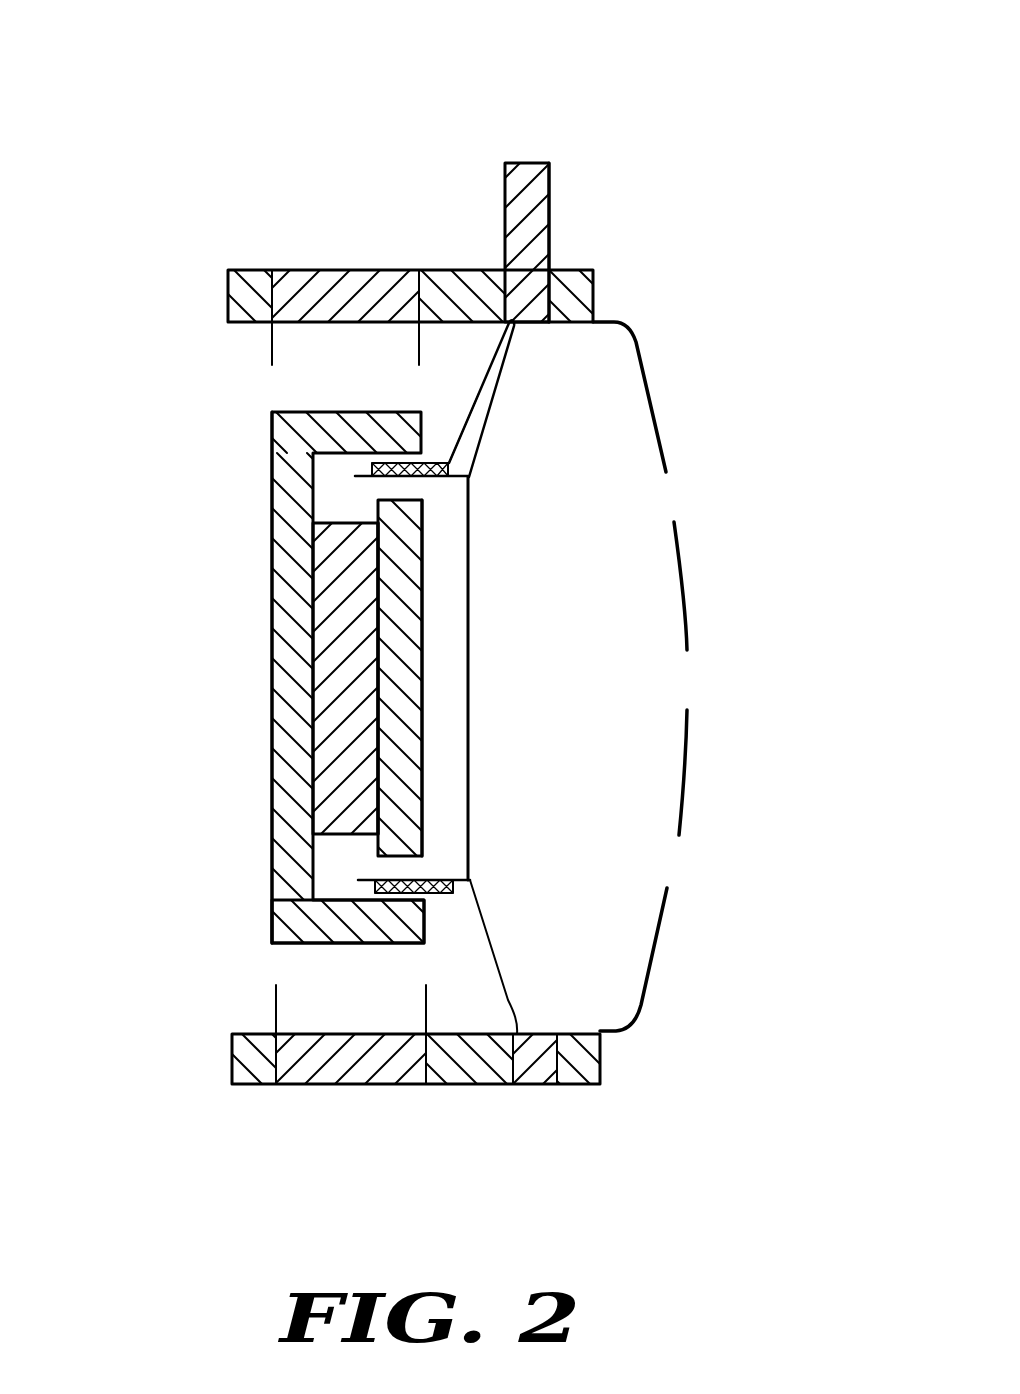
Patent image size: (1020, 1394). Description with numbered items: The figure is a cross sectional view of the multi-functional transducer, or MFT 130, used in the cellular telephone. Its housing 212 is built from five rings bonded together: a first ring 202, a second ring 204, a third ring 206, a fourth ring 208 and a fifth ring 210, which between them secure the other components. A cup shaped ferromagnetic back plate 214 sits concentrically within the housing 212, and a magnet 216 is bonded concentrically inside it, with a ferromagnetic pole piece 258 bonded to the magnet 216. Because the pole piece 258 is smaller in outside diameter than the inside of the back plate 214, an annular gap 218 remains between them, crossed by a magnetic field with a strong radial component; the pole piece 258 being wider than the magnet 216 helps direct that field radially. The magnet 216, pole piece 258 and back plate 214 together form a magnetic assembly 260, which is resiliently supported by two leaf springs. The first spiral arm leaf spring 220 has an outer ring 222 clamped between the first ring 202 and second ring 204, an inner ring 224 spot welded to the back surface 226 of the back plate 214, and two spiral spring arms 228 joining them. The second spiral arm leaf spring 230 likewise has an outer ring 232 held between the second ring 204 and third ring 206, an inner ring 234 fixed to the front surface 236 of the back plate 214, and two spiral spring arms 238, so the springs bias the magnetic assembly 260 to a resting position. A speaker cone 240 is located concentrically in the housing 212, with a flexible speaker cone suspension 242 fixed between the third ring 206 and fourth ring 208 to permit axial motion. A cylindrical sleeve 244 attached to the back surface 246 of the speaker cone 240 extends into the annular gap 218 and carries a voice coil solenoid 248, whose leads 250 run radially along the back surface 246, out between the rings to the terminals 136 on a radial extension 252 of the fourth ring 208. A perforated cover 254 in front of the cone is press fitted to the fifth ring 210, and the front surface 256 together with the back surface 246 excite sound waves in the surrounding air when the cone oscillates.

The multi-functional transducer (MFT) 130 is at (592, 114).
The terminals 136 is at (505, 200).
The first ring 202 is at (248, 1085).
The second ring 204 is at (348, 1085).
The third ring 206 is at (480, 1085).
The fourth ring 208 is at (545, 1085).
The fifth ring 210 is at (392, 1073).
The housing 212 is at (407, 268).
The cup shaped ferromagnetic back plate 214 is at (277, 689).
The magnet 216 is at (382, 561).
The annular gap 218 is at (397, 487).
The first spiral arm leaf spring 220 is at (277, 1005).
The outer ring 222 is at (277, 1067).
The inner ring 224 is at (272, 940).
The back surface 226 is at (266, 740).
The spiral spring arms 228 is at (272, 345).
The second spiral arm leaf spring 230 is at (427, 1020).
The outer ring 232 is at (425, 1085).
The inner ring 234 is at (428, 942).
The front surface 236 is at (438, 911).
The spiral spring arms 238 is at (418, 344).
The speaker cone 240 is at (475, 440).
The speaker cone suspension 242 is at (512, 335).
The cylindrical sleeve 244 is at (420, 477).
The back surface 246 is at (455, 630).
The voice coil solenoid 248 is at (433, 880).
The leads 250 is at (458, 444).
The radial extension 252 is at (551, 182).
The perforated cover 254 is at (684, 570).
The front surface 256 is at (468, 680).
The ferromagnetic pole piece 258 is at (425, 748).
The magnetic assembly 260 is at (372, 588).